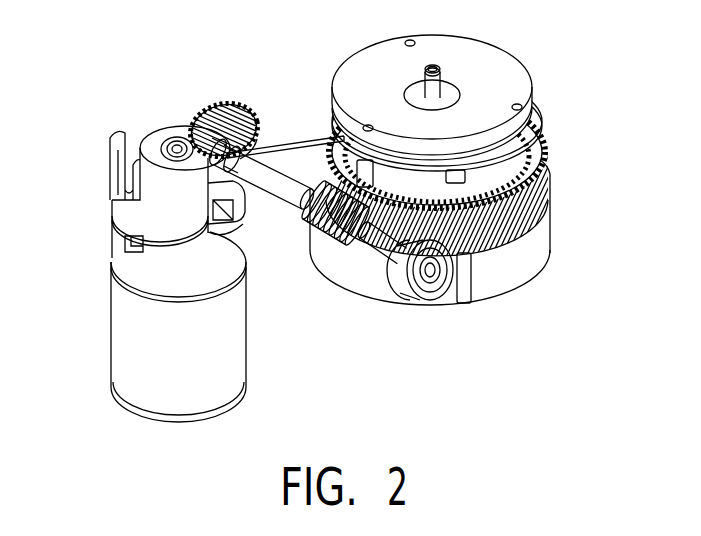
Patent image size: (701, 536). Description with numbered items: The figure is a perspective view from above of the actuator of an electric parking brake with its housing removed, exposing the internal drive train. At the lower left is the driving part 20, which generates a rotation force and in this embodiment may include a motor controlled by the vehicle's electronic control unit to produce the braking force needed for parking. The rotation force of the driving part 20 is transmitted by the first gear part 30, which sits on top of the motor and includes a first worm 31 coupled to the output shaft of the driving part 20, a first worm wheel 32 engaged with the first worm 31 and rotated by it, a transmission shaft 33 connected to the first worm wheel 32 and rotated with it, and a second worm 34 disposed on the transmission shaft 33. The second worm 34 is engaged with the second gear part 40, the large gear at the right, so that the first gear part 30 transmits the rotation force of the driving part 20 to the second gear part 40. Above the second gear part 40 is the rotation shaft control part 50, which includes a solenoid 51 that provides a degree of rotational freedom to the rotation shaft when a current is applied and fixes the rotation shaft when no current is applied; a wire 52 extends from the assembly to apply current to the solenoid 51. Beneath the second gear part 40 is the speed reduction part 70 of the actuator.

The driving part 20 is at (120, 313).
The first gear part 30 is at (238, 100).
The first worm 31 is at (165, 134).
The first worm wheel 32 is at (280, 195).
The transmission shaft 33 is at (212, 103).
The second worm 34 is at (328, 248).
The second gear part 40 is at (556, 131).
The rotation shaft control part 50 is at (521, 47).
The solenoid 51 is at (523, 87).
The wire 52 is at (304, 141).
The speed reduction part 70 is at (562, 209).